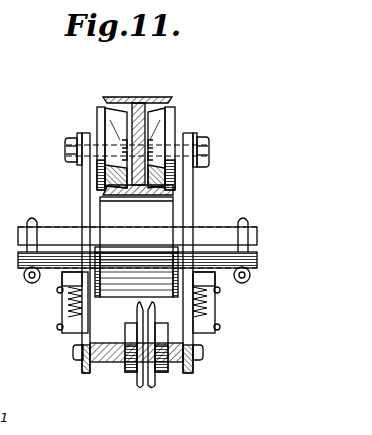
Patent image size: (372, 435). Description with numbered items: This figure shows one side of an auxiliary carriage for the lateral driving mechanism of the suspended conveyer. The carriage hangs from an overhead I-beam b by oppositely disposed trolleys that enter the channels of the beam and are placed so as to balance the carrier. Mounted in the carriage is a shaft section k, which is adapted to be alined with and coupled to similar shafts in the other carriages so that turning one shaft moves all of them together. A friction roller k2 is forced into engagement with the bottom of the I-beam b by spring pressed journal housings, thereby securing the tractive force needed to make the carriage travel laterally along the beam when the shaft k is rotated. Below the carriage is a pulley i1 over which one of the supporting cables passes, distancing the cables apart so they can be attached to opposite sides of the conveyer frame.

The I-beam b is at (140, 98).
The friction roller k2 is at (163, 205).
The shaft section k is at (208, 237).
The pulley i1 is at (152, 368).